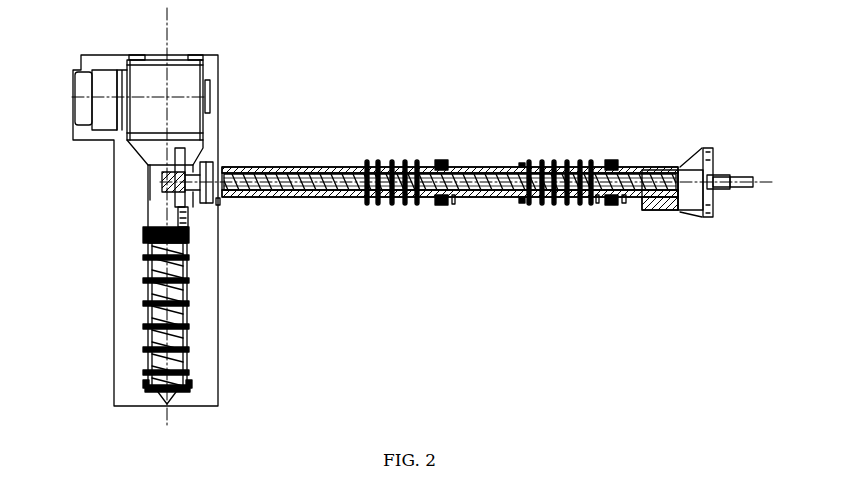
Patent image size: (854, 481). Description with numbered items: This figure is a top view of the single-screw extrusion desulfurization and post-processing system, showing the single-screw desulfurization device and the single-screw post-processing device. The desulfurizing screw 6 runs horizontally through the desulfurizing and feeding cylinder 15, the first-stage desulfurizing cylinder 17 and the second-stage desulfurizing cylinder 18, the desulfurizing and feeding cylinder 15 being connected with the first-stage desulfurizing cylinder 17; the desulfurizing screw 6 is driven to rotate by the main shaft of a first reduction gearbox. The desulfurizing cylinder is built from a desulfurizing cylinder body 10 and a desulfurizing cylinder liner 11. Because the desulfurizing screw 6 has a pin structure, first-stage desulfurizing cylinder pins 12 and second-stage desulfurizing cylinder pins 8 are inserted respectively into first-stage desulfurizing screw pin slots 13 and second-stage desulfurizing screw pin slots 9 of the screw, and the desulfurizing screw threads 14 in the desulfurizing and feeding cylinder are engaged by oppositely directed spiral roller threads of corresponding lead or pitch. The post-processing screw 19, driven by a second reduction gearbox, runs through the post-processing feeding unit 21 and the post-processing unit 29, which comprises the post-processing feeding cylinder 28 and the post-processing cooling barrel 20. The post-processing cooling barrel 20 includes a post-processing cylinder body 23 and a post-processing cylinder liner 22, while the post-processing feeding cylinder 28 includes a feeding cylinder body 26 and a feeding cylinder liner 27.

The desulfurizing screw 6 is at (265, 167).
The second-stage desulfurizing cylinder pins 8 is at (369, 163).
The second-stage desulfurizing screw pin slots 9 is at (397, 165).
The desulfurizing cylinder body 10 is at (487, 167).
The desulfurizing cylinder liner 11 is at (524, 222).
The first-stage desulfurizing cylinder pins 12 is at (553, 163).
The first-stage desulfurizing screw pin slots 13 is at (596, 165).
The desulfurizing screw threads 14 is at (664, 213).
The desulfurizing and feeding cylinder 15 is at (680, 167).
The first-stage desulfurizing cylinder 17 is at (493, 195).
The second-stage desulfurizing cylinder 18 is at (330, 195).
The post-processing screw 19 is at (185, 288).
The post-processing cooling barrel 20 is at (185, 312).
The post-processing feeding unit 21 is at (185, 347).
The post-processing cylinder liner 22 is at (188, 387).
The post-processing cylinder body 23 is at (150, 372).
The feeding cylinder body 26 is at (147, 230).
The feeding cylinder liner 27 is at (148, 217).
The post-processing feeding cylinder 28 is at (157, 200).
The post-processing unit 29 is at (147, 362).